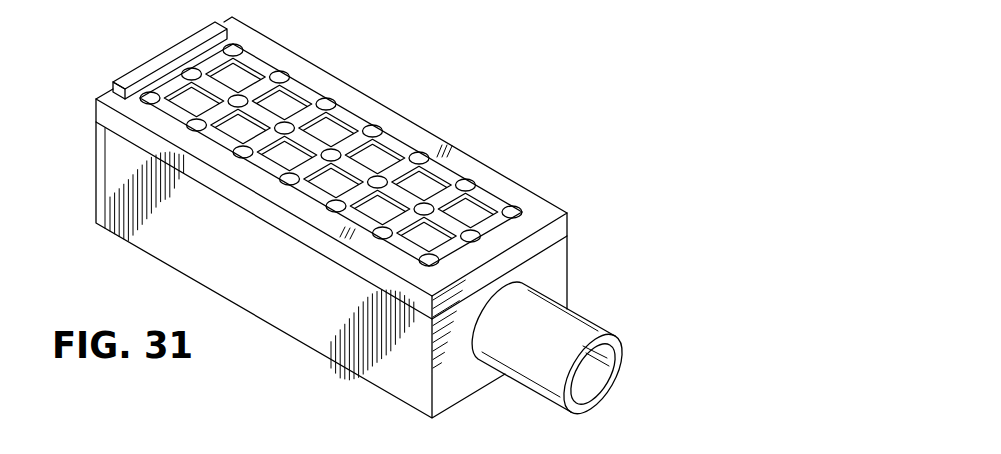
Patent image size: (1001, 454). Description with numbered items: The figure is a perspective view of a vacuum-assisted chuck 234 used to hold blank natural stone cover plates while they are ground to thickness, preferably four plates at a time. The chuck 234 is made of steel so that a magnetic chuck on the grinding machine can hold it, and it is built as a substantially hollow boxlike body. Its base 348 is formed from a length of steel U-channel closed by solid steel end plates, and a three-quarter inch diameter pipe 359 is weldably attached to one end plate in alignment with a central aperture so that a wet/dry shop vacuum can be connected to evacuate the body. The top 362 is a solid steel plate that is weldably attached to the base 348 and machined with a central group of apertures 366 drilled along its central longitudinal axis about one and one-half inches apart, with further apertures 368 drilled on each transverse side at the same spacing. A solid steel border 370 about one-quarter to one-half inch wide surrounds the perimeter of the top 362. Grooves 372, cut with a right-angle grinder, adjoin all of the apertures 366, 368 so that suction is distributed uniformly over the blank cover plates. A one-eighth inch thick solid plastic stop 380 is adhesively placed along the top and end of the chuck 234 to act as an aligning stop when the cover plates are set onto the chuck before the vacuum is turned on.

The vacuum-assisted chuck 234 is at (118, 256).
The base 348 is at (569, 262).
The pipe 359 is at (604, 330).
The top 362 is at (492, 168).
The central group of apertures 366 is at (200, 52).
The apertures 368 is at (237, 50).
The solid steel border 370 is at (377, 115).
The grooves 372 is at (262, 108).
The solid plastic stop 380 is at (130, 72).